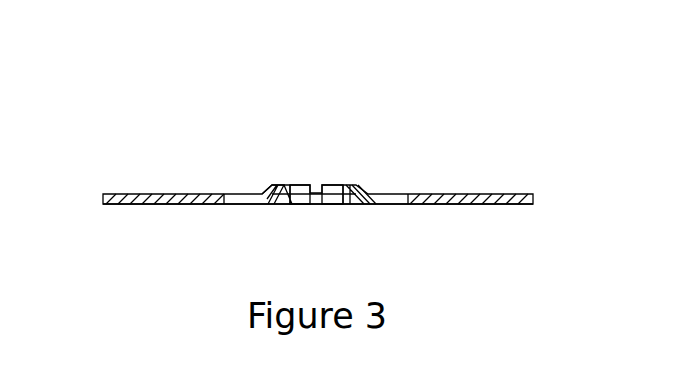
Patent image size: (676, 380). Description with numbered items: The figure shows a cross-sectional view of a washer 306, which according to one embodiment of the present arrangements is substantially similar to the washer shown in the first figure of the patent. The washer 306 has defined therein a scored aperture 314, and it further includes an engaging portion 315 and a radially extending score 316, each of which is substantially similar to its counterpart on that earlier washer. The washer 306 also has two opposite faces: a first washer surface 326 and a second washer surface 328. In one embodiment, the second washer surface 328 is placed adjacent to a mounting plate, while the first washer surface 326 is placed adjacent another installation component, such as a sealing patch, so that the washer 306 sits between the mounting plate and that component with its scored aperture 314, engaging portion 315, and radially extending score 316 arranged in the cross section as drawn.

The washer 306 is at (206, 83).
The first washer surface 326 is at (168, 192).
The second washer surface 328 is at (130, 206).
The scored aperture 314 is at (318, 188).
The engaging portion 315 is at (335, 190).
The radially extending score 316 is at (283, 205).